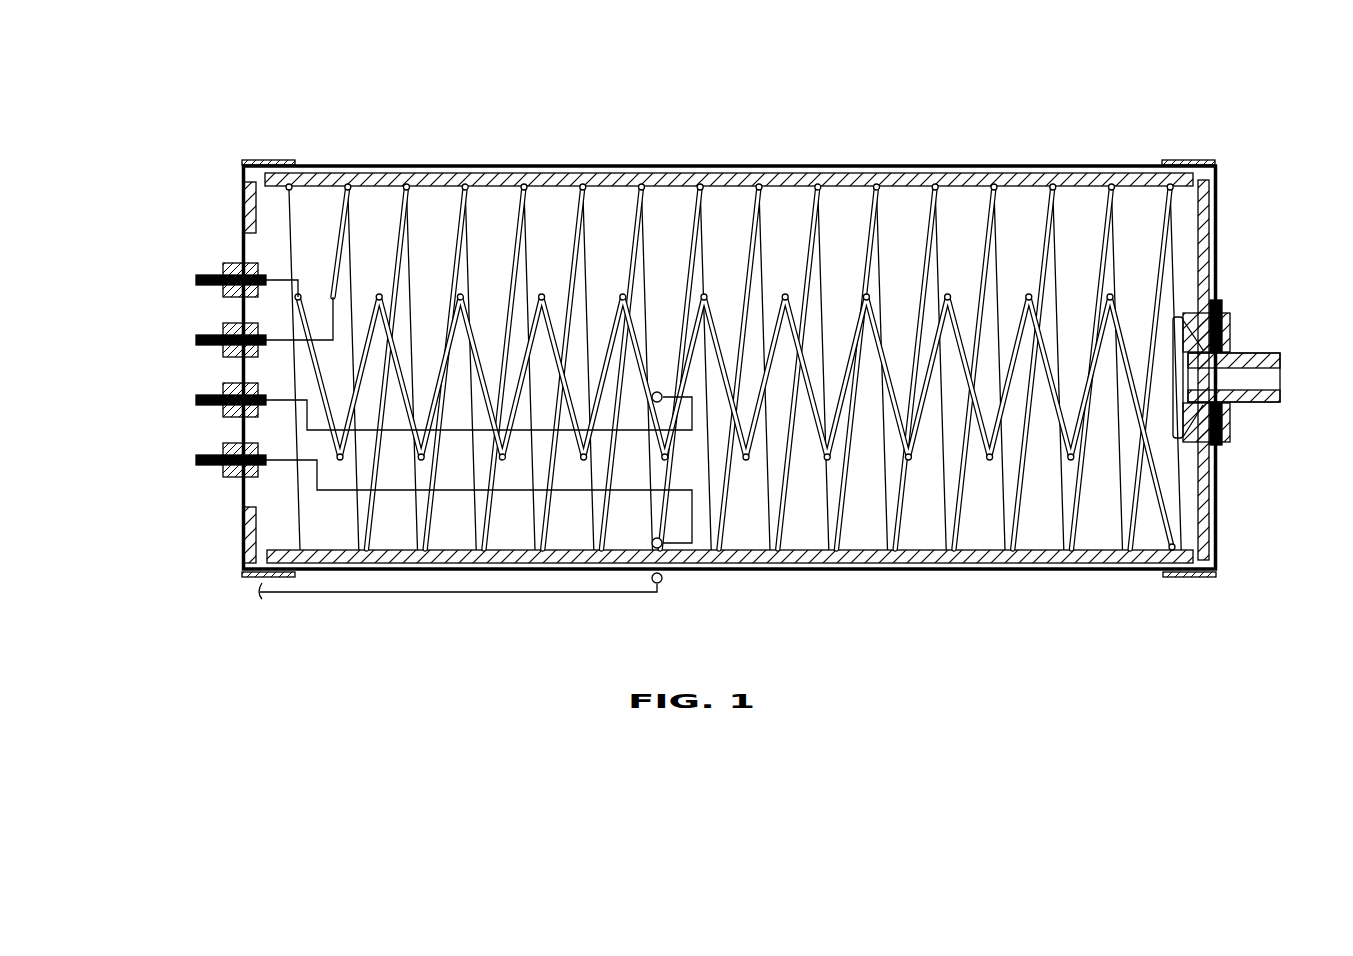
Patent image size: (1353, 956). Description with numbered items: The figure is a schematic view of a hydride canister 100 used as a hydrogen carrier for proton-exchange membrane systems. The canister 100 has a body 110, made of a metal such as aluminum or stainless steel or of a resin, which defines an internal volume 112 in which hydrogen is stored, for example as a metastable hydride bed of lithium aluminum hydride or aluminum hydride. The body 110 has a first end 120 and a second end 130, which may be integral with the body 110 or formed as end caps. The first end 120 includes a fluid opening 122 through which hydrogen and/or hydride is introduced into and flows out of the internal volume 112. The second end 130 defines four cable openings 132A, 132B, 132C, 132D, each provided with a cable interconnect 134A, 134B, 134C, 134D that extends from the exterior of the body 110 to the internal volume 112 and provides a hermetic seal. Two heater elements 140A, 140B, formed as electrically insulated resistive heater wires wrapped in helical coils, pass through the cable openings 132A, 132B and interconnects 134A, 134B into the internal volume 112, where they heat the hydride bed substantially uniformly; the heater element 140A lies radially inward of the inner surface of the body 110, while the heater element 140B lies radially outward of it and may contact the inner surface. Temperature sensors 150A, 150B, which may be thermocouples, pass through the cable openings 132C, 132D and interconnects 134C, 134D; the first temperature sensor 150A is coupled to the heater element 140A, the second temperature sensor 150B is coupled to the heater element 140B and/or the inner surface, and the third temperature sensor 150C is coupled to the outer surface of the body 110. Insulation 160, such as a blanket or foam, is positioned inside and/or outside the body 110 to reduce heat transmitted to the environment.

The canister 100 is at (250, 60).
The body 110 is at (430, 172).
The internal volume 112 is at (486, 202).
The first end 120 is at (1218, 208).
The fluid opening 122 is at (1248, 343).
The second end 130 is at (243, 200).
The cable opening 132A is at (193, 267).
The cable interconnect 134A is at (222, 266).
The cable opening 132B is at (210, 326).
The cable interconnect 134B is at (222, 324).
The cable opening 132C is at (390, 392).
The cable interconnect 134C is at (222, 383).
The cable opening 132D is at (390, 477).
The cable interconnect 134D is at (222, 441).
The first heater element 140A is at (718, 330).
The second heater element 140B is at (870, 277).
The first temperature sensor 150A is at (658, 391).
The second temperature sensor 150B is at (650, 546).
The third temperature sensor 150C is at (664, 581).
The insulation 160 is at (935, 565).